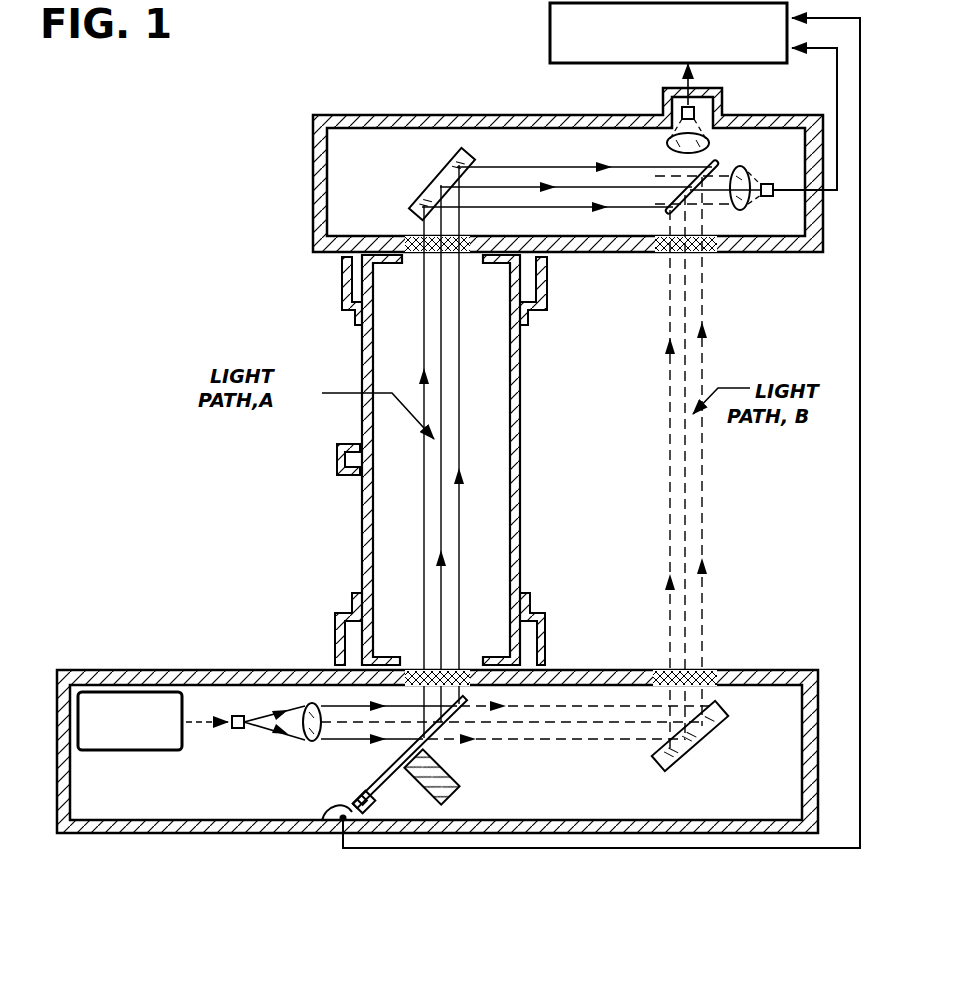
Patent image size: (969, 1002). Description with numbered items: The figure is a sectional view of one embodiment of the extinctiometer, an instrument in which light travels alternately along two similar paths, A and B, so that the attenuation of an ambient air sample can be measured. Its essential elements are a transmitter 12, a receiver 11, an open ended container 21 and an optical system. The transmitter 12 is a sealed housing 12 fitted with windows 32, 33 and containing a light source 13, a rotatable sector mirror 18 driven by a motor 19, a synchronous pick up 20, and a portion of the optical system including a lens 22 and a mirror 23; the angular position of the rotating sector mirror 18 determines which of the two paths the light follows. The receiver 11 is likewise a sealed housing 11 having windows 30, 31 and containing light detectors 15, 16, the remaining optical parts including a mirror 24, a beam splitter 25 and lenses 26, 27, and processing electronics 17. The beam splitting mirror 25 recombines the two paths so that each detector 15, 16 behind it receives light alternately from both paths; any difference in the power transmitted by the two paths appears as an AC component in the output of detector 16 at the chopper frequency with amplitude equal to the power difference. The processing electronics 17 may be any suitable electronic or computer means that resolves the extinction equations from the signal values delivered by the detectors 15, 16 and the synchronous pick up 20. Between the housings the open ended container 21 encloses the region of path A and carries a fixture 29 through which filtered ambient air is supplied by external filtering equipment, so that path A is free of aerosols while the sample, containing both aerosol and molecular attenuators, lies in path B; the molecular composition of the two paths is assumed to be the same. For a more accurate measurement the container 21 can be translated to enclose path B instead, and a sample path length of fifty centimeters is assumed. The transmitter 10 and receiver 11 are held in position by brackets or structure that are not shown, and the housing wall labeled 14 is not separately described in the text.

The transmitter 10 is at (458, 477).
The receiver 11 is at (527, 187).
The transmitter 12 is at (182, 672).
The light source 13 is at (118, 752).
The upper housing 14 is at (456, 114).
The light detector 15 is at (672, 108).
The light detector 16 is at (770, 184).
The processing electronics 17 is at (548, 32).
The rotatable sector mirror 18 is at (380, 770).
The motor 19 is at (456, 771).
The synchronous pick up 20 is at (331, 811).
The open ended container 21 is at (520, 446).
The lens 22 is at (306, 742).
The mirror 23 is at (690, 752).
The mirror 24 is at (423, 197).
The beam splitter 25 is at (668, 210).
The lens 26 is at (745, 212).
The lens 27 is at (708, 133).
The fixture 29 is at (340, 470).
The window 30 is at (426, 253).
The window 31 is at (668, 254).
The window 32 is at (462, 672).
The window 33 is at (712, 672).